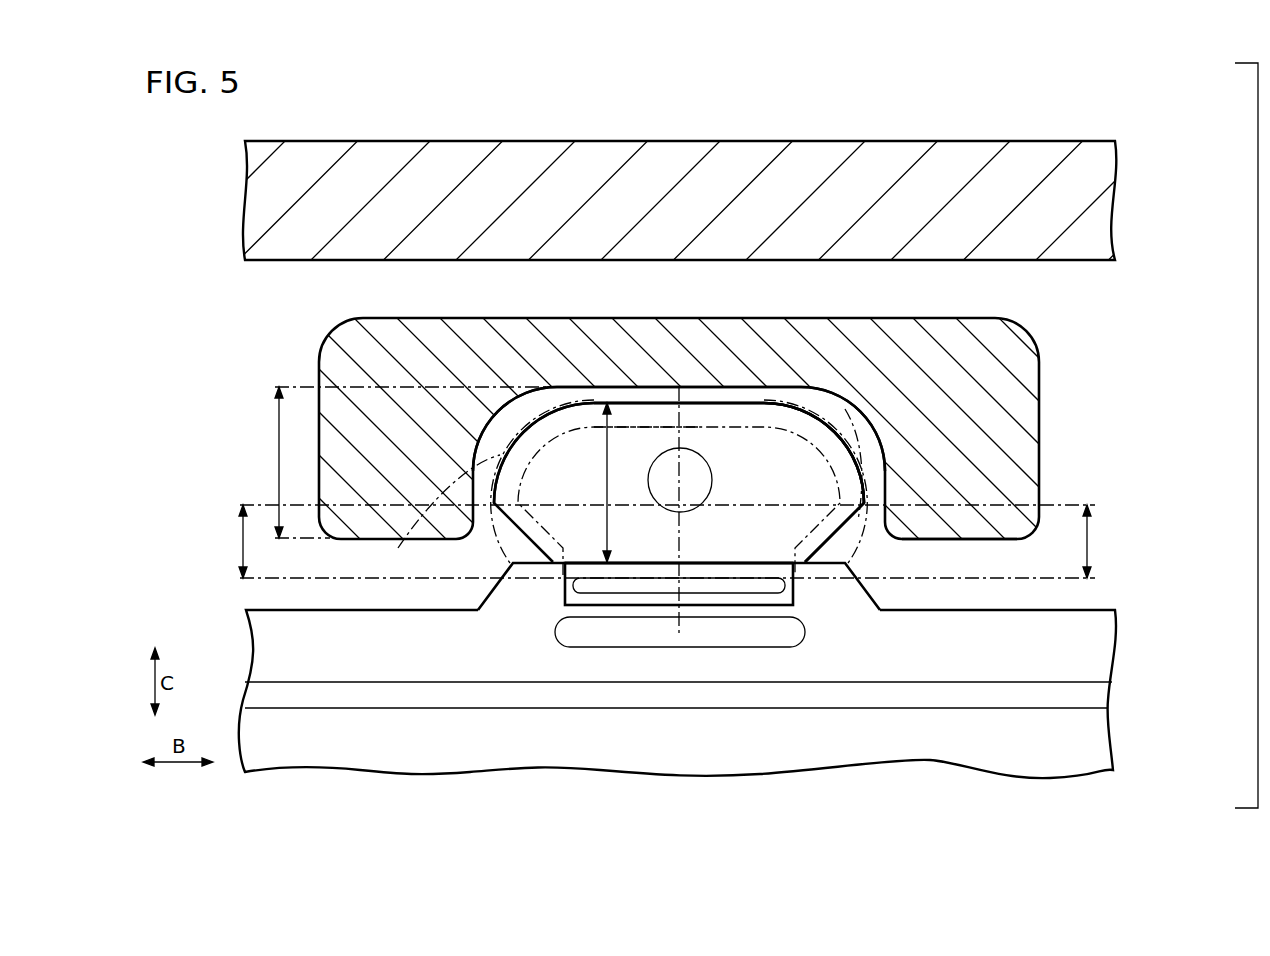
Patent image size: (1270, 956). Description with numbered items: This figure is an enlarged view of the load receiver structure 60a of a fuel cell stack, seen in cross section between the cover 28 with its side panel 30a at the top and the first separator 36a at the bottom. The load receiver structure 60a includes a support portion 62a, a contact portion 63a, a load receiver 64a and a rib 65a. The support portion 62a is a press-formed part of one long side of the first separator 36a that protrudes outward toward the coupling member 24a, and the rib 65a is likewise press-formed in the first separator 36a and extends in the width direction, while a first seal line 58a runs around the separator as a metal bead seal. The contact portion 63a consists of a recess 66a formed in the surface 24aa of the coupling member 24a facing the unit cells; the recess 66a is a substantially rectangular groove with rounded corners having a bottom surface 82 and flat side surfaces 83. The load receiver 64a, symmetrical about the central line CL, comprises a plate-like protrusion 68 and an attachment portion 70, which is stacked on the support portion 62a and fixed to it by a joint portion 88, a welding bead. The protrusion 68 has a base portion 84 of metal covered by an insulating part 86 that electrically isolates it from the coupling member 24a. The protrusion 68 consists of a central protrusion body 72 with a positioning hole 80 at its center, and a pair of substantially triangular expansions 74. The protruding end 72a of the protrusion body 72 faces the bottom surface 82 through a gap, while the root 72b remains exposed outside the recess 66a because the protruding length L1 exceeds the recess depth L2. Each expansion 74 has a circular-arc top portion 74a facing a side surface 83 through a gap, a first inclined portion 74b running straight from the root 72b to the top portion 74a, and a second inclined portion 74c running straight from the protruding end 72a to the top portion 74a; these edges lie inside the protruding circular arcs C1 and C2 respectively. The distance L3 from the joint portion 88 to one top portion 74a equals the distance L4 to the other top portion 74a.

The cover 28 is at (909, 140).
The side panel 30a is at (1031, 156).
The coupling member 24a is at (1040, 361).
The surface of the coupling member 24aa is at (928, 541).
The first separator 36a is at (1100, 648).
The first seal line 58a is at (1098, 700).
The load receiver structure 60a is at (1073, 312).
The support portion 62a is at (495, 597).
The contact portion 63a is at (874, 408).
The load receiver 64a is at (872, 479).
The rib 65a is at (757, 634).
The recess 66a is at (852, 440).
The protrusion 68 is at (585, 266).
The attachment portion 70 is at (718, 573).
The protrusion body 72 is at (738, 404).
The protruding end 72a is at (708, 404).
The root 72b is at (803, 565).
The expansion 74 is at (538, 430).
The top portion 74a is at (865, 514).
The first inclined portion 74b is at (837, 543).
The second inclined portion 74c is at (860, 448).
The positioning hole 80 is at (702, 485).
The bottom surface of the recess 82 is at (746, 406).
The side surface of the recess 83 is at (500, 489).
The base portion 84 is at (650, 426).
The insulating part 86 is at (663, 403).
The joint portion 88 is at (647, 590).
The protruding circular arc C1 is at (505, 547).
The protruding circular arc C2 is at (398, 548).
The central line CL is at (679, 628).
The protruding length L1 is at (607, 482).
The depth of the recess L2 is at (412, 462).
The distance L3 is at (1085, 541).
The distance L4 is at (663, 541).